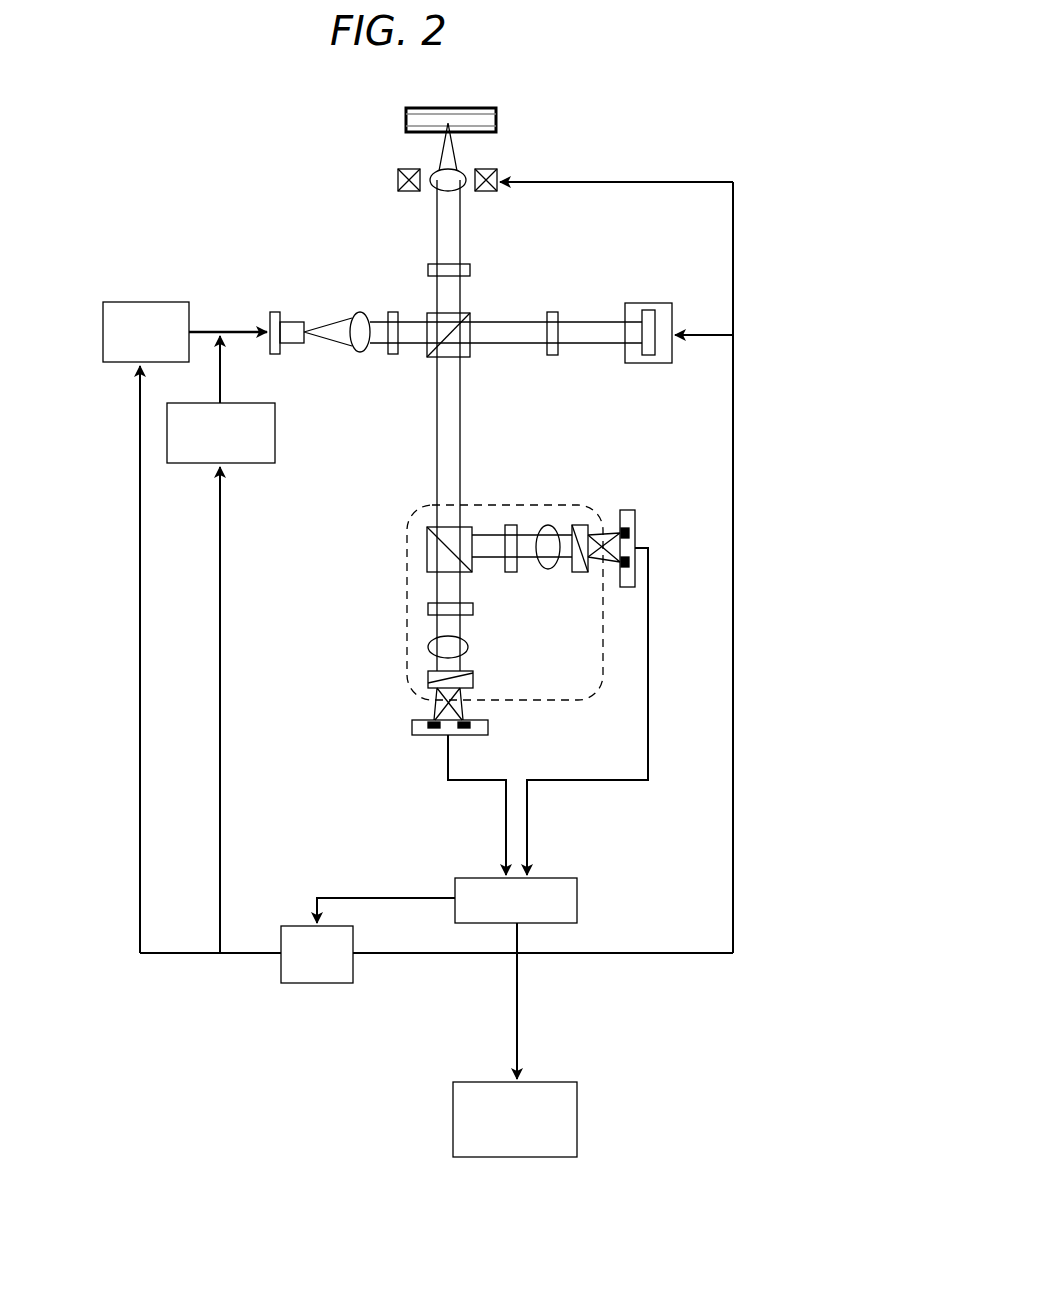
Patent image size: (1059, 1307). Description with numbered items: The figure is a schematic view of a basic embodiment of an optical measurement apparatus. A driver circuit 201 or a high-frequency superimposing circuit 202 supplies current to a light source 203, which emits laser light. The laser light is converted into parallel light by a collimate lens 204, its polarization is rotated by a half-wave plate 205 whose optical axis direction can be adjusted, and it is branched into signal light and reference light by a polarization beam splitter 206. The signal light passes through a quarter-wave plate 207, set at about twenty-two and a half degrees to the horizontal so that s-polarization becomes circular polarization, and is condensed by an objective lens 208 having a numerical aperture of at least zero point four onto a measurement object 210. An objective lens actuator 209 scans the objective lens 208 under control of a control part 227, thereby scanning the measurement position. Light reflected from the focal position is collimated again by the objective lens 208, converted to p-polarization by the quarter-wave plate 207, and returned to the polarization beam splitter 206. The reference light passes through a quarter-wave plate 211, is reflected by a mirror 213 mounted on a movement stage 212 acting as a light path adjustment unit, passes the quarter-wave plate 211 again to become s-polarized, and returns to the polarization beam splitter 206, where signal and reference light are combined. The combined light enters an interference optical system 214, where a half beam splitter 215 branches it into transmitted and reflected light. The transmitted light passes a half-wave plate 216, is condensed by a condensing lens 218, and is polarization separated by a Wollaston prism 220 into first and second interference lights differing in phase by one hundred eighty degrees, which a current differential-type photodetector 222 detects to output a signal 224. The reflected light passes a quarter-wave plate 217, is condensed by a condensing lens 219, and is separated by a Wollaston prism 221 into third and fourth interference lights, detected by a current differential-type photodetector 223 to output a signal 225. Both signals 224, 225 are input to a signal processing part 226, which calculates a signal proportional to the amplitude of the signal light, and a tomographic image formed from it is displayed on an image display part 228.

The driver circuit 201 is at (103, 330).
The high-frequency superimposing circuit 202 is at (275, 440).
The light source 203 is at (270, 312).
The collimate lens 204 is at (352, 318).
The λ/2 plate 205 is at (390, 355).
The polarization beam splitter 206 is at (428, 314).
The λ/4 plate 207 is at (430, 268).
The objective lens 208 is at (460, 186).
The objective lens actuator 209 is at (497, 171).
The measurement object 210 is at (405, 120).
The λ/4 plate 211 is at (552, 312).
The movement stage 212 is at (635, 303).
The mirror 213 is at (655, 310).
The interference optical system 214 is at (603, 630).
The half beam splitter 215 is at (427, 545).
The λ/2 plate 216 is at (473, 609).
The λ/4 plate 217 is at (509, 525).
The condensing lens 218 is at (468, 647).
The condensing lens 219 is at (548, 525).
The Wollaston prism 220 is at (473, 680).
The Wollaston prism 221 is at (582, 525).
The current differential-type photodetector 222 is at (488, 727).
The current differential-type photodetector 223 is at (628, 510).
The signal 224 is at (449, 758).
The signal 225 is at (648, 565).
The signal processing part 226 is at (457, 878).
The control part 227 is at (283, 983).
The image display part 228 is at (577, 1118).